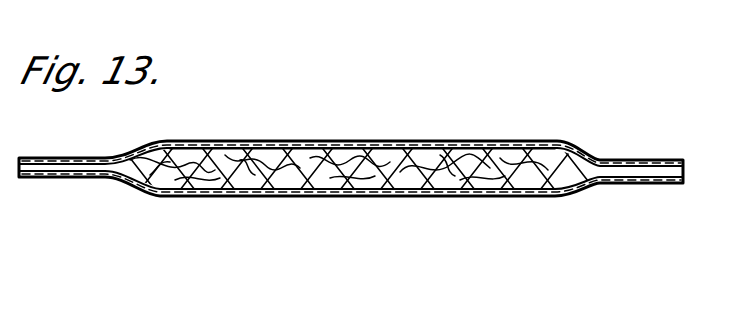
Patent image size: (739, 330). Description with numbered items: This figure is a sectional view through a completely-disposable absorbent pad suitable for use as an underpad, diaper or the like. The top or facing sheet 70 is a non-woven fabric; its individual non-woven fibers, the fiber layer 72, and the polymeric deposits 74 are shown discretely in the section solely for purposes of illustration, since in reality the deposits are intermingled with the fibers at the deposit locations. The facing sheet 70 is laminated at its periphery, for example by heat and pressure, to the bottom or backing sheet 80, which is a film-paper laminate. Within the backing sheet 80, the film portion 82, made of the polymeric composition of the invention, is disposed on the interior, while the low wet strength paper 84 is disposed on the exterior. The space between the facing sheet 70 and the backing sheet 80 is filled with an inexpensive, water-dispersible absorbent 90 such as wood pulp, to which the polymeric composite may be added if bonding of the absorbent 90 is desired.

The top or facing sheet 70 is at (543, 120).
The fiber layer 72 is at (363, 141).
The polymeric deposits 74 is at (285, 141).
The bottom or backing sheet 80 is at (575, 198).
The film portion 82 is at (250, 198).
The low wet strength paper 84 is at (328, 198).
The water-dispersible absorbent 90 is at (427, 198).